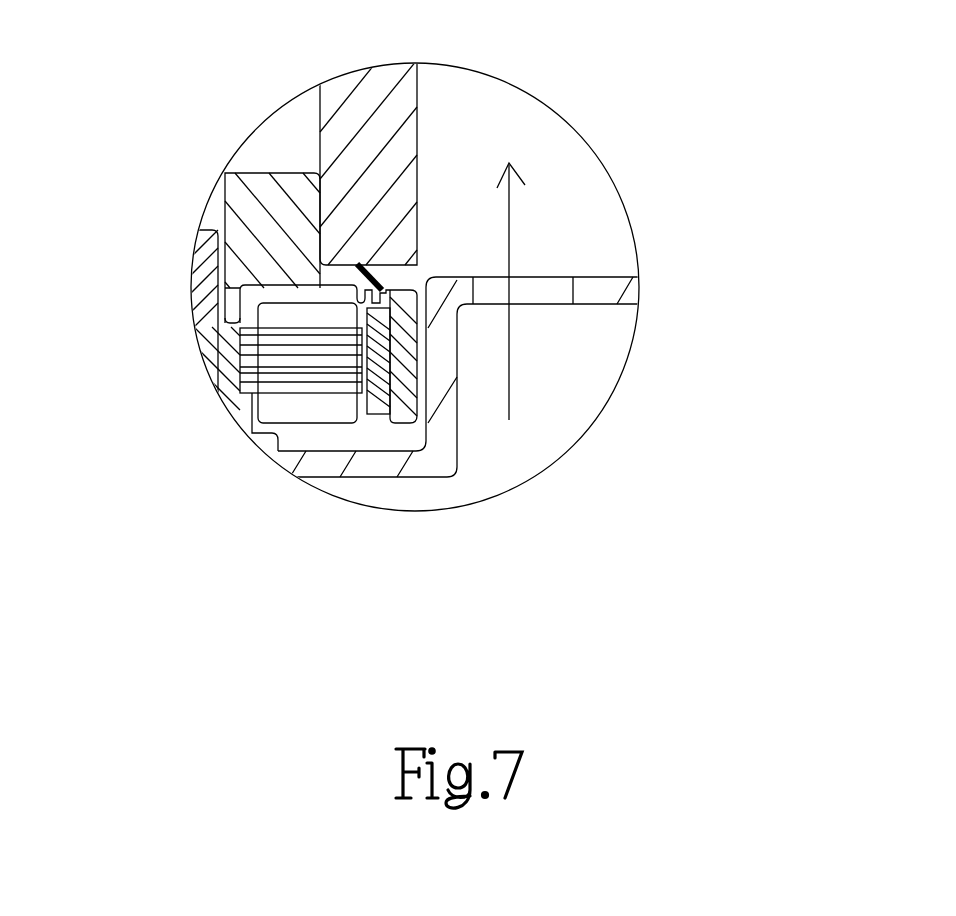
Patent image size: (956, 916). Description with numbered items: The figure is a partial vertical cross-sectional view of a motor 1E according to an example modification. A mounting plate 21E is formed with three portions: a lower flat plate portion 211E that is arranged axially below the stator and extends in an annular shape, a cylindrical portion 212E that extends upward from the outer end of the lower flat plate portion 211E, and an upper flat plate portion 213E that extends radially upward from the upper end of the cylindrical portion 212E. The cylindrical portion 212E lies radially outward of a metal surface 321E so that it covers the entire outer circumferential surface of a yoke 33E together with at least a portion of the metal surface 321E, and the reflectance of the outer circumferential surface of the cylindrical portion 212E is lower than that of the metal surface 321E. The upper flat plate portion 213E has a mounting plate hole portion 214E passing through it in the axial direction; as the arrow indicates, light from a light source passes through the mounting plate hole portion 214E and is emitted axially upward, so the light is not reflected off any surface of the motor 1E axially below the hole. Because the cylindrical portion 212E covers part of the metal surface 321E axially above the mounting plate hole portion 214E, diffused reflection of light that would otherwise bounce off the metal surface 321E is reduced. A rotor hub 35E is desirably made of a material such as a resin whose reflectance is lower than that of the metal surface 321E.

The motor 1E is at (100, 39).
The mounting plate 21E is at (743, 330).
The lower flat plate portion 211E is at (368, 460).
The cylindrical portion 212E is at (445, 355).
The upper flat plate portion 213E is at (603, 288).
The mounting plate hole portion 214E is at (522, 290).
The yoke 33E is at (403, 332).
The rotor hub 35E is at (367, 170).
The metal surface 321E is at (357, 288).